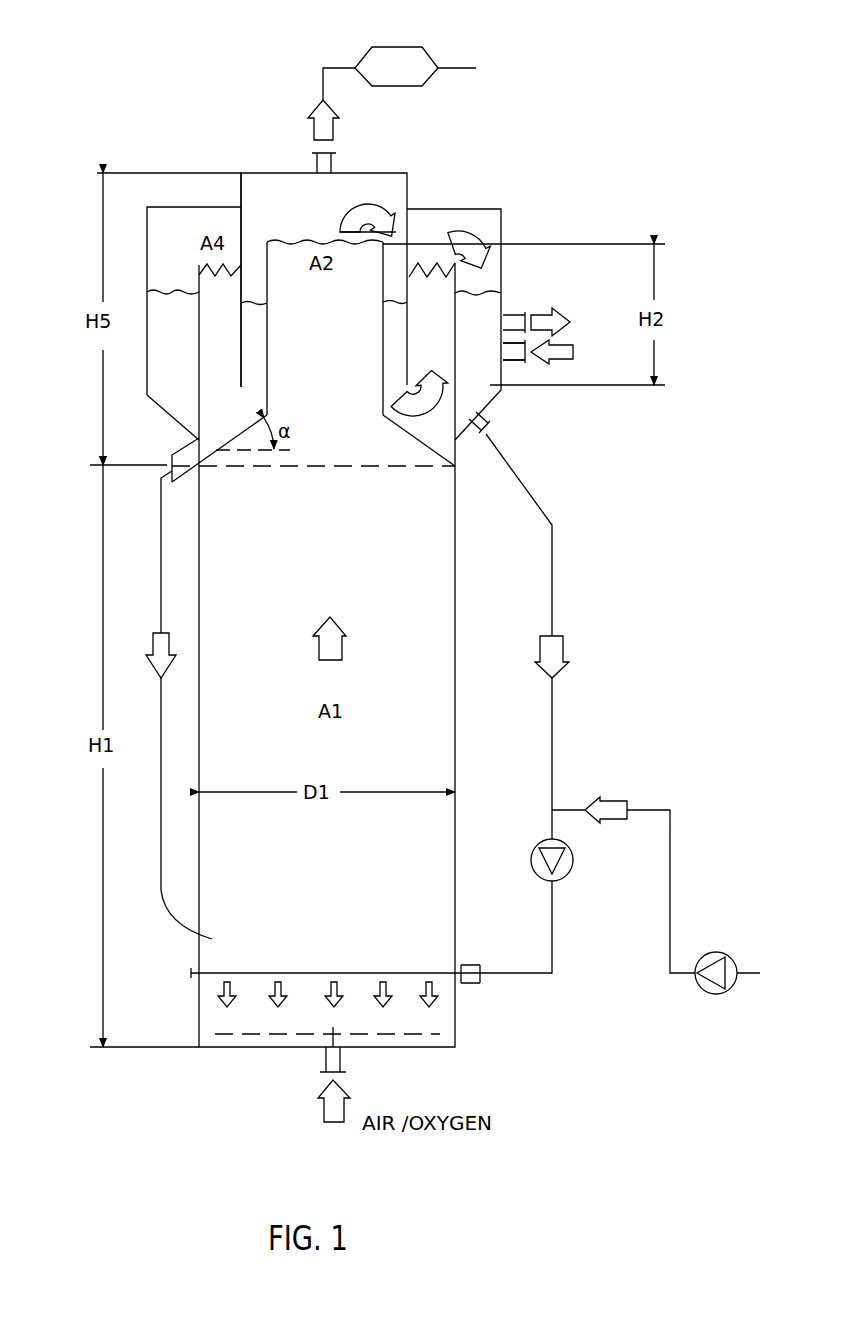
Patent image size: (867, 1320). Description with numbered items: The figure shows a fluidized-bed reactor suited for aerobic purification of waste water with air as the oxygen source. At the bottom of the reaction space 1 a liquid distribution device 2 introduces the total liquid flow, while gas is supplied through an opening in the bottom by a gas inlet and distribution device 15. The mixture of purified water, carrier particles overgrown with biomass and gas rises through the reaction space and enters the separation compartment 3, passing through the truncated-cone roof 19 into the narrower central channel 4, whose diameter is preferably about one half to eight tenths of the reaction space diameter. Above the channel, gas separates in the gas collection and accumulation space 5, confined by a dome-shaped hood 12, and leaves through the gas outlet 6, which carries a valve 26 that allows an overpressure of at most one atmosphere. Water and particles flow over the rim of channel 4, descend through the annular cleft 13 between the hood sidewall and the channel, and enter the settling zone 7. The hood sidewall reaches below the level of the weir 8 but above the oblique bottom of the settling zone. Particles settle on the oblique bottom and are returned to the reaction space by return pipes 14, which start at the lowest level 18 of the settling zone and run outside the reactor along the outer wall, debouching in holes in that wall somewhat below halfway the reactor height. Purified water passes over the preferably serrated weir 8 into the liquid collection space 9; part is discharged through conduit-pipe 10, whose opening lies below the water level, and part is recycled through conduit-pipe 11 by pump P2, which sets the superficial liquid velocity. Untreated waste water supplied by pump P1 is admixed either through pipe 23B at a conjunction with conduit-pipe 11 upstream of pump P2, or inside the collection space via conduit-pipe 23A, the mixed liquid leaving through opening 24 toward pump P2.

The reaction space 1 is at (338, 587).
The liquid distribution device 2 is at (359, 970).
The separation compartment 3 is at (506, 239).
The central channel 4 is at (329, 322).
The gas collection and accumulation space 5 is at (362, 193).
The gas outlet 6 is at (338, 164).
The settling zone 7 is at (220, 322).
The weir 8 is at (426, 256).
The liquid collection space 9 is at (481, 326).
The discharge conduit-pipe 10 is at (513, 311).
The conduit-pipe 11 is at (557, 571).
The dome-shaped hood 12 is at (412, 183).
The annular cleft 13 is at (256, 250).
The return pipes 14 is at (156, 556).
The gas inlet and distribution device 15 is at (372, 1042).
The lowest level of the settling zone 18 is at (184, 447).
The roof 19 is at (422, 449).
The conduit-pipe for untreated waste water 23A is at (521, 365).
The pipe containing untreated waste water 23B is at (566, 807).
The opening 24 is at (493, 423).
The valve 26 is at (407, 59).
The pump P1 is at (727, 961).
The pump P2 is at (573, 860).